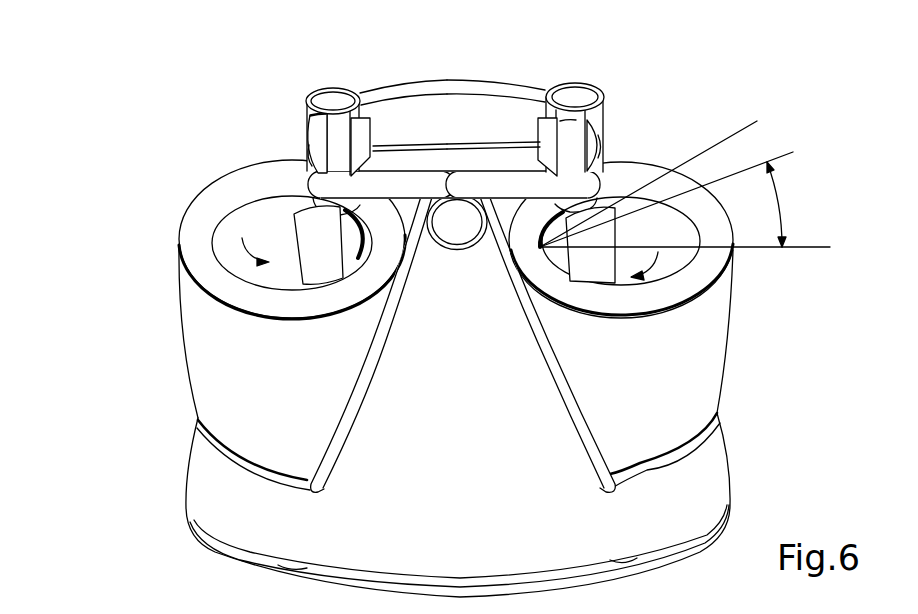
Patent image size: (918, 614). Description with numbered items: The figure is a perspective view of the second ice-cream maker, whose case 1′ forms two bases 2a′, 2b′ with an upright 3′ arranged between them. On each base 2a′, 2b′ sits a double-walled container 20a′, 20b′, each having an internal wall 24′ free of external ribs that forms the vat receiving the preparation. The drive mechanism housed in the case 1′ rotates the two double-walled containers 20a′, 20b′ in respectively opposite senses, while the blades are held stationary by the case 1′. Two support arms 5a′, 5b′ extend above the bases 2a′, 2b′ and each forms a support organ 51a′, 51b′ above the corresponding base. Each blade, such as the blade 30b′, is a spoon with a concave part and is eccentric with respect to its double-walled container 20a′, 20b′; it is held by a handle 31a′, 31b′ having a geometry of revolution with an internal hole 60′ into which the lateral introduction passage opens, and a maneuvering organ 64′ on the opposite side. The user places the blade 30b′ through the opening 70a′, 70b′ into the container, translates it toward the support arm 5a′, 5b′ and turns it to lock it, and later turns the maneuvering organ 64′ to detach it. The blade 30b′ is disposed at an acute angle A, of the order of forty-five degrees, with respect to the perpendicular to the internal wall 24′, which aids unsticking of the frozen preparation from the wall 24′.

The case 1′ is at (183, 557).
The base 2a′ is at (690, 463).
The base 2b′ is at (212, 458).
The upright 3′ is at (462, 403).
The support arm 5a′ is at (507, 167).
The support arm 5b′ is at (387, 163).
The double-walled container 20a′ is at (663, 345).
The double-walled container 20b′ is at (223, 377).
The internal wall 24′ is at (757, 121).
The blade 30b′ is at (232, 247).
The handle 31a′ is at (573, 137).
The handle 31b′ is at (313, 120).
The support organ 51a′ is at (612, 197).
The support organ 51b′ is at (305, 183).
The internal hole 60′ is at (327, 102).
The maneuvering organ 64′ is at (307, 157).
The opening 70a′ is at (603, 175).
The opening 70b′ is at (253, 157).
The angle A is at (685, 199).